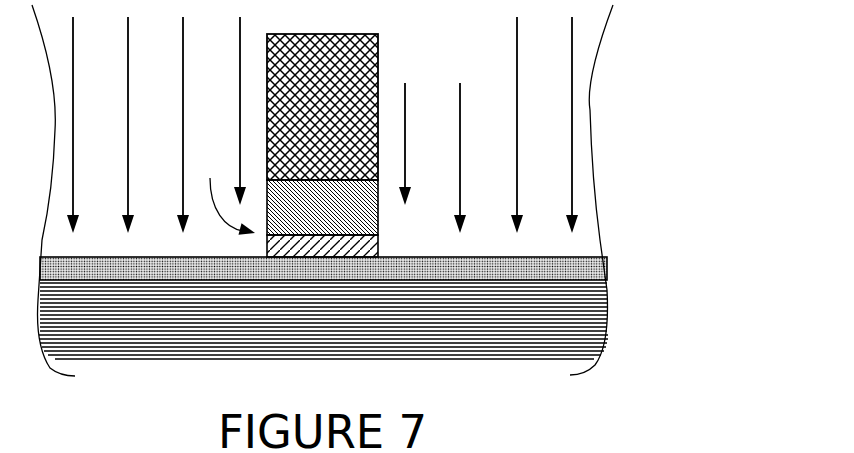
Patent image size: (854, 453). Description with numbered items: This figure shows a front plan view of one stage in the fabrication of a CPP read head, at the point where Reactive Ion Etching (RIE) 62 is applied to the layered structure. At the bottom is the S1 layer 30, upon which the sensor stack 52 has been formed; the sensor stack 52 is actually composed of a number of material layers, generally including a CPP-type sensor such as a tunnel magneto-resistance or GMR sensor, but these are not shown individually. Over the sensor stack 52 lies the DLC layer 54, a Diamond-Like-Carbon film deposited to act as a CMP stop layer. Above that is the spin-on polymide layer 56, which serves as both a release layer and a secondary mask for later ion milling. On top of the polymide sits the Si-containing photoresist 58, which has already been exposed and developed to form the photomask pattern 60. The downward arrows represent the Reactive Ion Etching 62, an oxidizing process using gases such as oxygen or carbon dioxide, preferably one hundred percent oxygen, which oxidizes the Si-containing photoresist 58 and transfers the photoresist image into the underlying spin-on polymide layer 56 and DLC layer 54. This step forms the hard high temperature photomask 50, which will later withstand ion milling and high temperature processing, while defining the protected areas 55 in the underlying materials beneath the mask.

The S1 layer 30 is at (610, 318).
The sensor stack 52 is at (607, 270).
The DLC layer 54 is at (378, 248).
The spin-on polymide layer 56 is at (378, 222).
The Si-containing photoresist 58 is at (386, 92).
The photomask pattern 60 is at (386, 92).
The high temperature photomask 50 is at (432, 36).
The Reactive Ion Etching 62 is at (183, 182).
The protected areas 55 is at (227, 190).